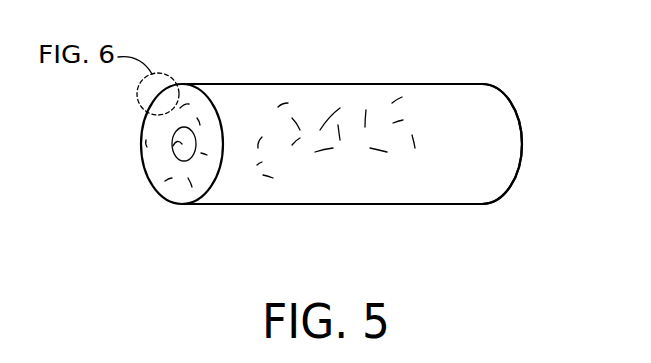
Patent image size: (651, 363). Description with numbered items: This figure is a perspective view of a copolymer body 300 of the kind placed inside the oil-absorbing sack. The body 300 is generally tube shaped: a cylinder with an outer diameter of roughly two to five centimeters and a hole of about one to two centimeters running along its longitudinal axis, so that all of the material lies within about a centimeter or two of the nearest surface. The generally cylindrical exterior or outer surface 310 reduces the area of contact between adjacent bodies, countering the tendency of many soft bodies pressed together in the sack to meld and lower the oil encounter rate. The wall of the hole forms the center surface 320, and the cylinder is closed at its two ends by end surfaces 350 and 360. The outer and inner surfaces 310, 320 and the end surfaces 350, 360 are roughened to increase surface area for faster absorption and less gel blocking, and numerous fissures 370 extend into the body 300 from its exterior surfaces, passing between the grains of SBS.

The copolymer body 300 is at (326, 128).
The outer surface 310 is at (336, 88).
The center surface 320 is at (176, 143).
The end surface 350 is at (172, 193).
The end surface 360 is at (512, 182).
The fissures 370 is at (337, 163).